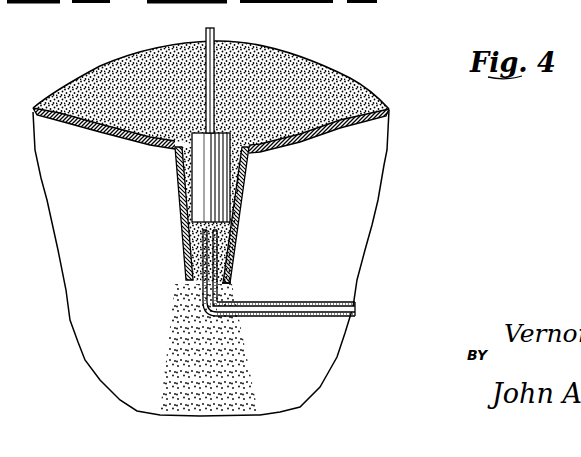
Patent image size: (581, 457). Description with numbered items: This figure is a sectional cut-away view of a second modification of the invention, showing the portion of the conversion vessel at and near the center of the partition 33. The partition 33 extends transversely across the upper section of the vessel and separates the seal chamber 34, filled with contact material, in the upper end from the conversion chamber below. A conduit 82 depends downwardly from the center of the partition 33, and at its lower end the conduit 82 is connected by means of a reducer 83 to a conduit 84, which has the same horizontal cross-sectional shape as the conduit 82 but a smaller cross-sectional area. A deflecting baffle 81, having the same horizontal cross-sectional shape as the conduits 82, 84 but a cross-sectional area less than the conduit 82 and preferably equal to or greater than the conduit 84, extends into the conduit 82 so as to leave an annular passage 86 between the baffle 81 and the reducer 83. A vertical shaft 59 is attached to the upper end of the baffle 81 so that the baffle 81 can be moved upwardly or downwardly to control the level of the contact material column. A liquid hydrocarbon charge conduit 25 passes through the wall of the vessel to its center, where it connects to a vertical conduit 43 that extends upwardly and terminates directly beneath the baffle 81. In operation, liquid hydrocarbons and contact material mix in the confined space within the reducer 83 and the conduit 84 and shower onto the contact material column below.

The vertical shaft 59 is at (214, 30).
The seal chamber 34 is at (318, 68).
The partition 33 is at (372, 118).
The conduit 82 is at (172, 167).
The deflecting baffle 81 is at (218, 174).
The annular passage 86 is at (233, 213).
The reducer 83 is at (236, 236).
The conduit 84 is at (228, 272).
The vertical conduit 43 is at (203, 291).
The liquid hydrocarbon charge conduit 25 is at (281, 320).